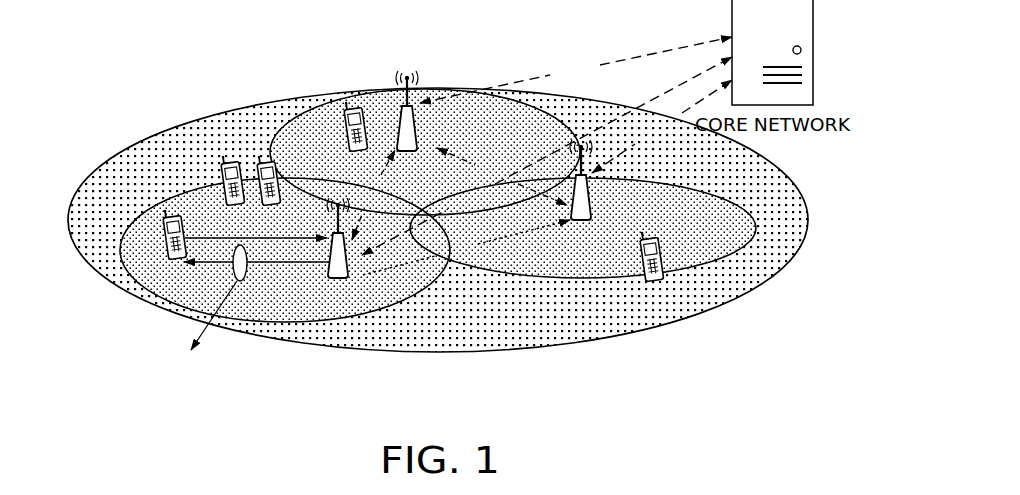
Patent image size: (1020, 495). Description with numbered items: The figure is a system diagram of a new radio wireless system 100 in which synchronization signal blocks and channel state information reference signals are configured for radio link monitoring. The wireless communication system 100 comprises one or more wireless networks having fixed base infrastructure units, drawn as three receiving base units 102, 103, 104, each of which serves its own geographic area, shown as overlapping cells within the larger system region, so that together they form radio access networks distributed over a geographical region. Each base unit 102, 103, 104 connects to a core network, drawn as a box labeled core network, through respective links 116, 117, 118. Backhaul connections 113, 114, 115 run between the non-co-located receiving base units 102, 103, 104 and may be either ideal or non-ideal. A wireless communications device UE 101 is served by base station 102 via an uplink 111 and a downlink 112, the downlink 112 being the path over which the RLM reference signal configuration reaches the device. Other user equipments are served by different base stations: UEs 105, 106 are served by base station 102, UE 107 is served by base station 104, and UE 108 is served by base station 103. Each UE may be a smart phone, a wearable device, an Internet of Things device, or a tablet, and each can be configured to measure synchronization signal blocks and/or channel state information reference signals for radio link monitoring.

The wireless communication system 100 is at (144, 34).
The UE 101 is at (169, 212).
The base unit 102 is at (336, 280).
The base unit 103 is at (405, 71).
The base unit 104 is at (582, 222).
The UE 105 is at (224, 161).
The UE 106 is at (261, 161).
The UE 107 is at (654, 240).
The UE 108 is at (347, 102).
The uplink 111 is at (263, 235).
The downlink 112 is at (271, 266).
The backhaul connection 113 is at (389, 211).
The backhaul connection 114 is at (472, 261).
The backhaul connection 115 is at (512, 190).
The link 116 is at (488, 208).
The link 117 is at (592, 81).
The link 118 is at (675, 141).